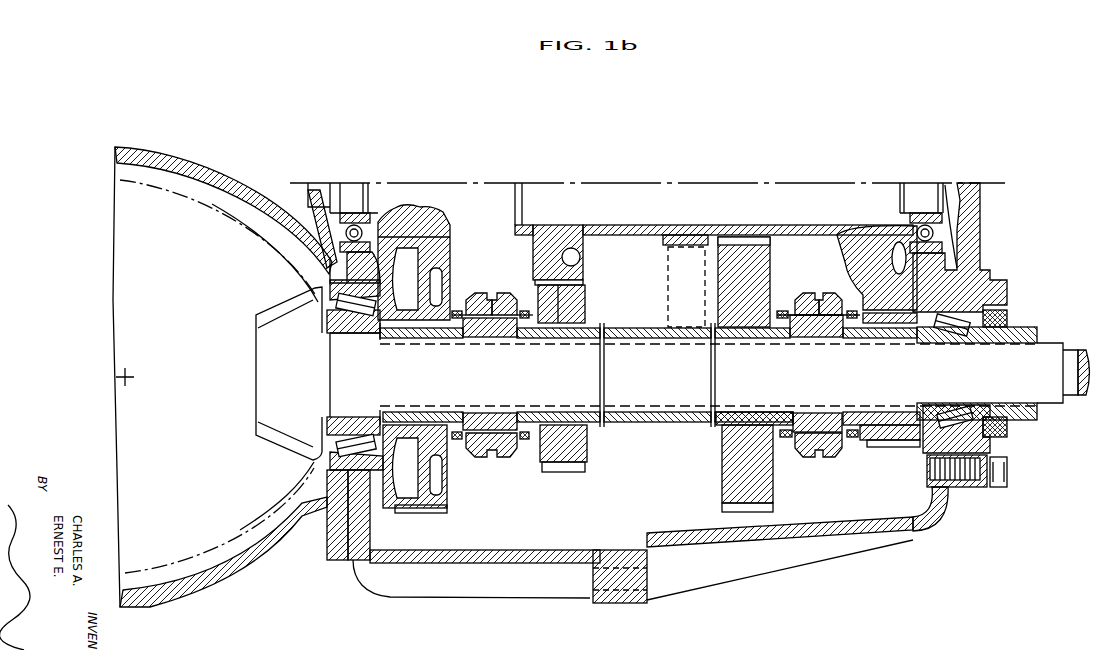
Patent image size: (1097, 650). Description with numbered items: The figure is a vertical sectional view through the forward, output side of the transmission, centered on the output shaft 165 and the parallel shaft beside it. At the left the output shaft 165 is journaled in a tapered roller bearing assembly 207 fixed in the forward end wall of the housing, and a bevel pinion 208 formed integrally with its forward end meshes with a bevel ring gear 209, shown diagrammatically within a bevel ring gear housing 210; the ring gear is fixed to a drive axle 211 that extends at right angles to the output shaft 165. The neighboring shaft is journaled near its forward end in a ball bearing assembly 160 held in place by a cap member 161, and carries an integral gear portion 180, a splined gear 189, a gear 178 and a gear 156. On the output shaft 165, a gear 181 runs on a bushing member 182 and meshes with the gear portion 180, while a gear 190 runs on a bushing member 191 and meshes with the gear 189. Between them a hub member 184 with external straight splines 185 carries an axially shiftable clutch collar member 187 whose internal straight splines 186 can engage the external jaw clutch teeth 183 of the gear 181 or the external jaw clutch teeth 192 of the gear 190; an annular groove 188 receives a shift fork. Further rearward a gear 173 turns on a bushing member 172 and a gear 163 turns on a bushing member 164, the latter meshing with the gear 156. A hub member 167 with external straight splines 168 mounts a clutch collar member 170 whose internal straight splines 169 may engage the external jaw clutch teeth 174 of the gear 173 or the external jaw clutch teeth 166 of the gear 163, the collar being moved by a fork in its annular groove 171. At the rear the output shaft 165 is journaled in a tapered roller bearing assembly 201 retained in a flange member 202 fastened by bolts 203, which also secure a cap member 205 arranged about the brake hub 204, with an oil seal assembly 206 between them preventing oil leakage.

The gear 156 is at (880, 246).
The ball bearing assembly 160 is at (355, 208).
The cap member 161 is at (310, 207).
The gear 163 is at (902, 447).
The bushing member 164 is at (888, 413).
The output shaft 165 is at (663, 390).
The external jaw clutch teeth 166 is at (850, 440).
The hub member 167 is at (820, 338).
The external straight splines 168 is at (800, 407).
The internal straight splines 169 is at (813, 433).
The clutch collar member 170 is at (807, 457).
The annular groove 171 is at (817, 297).
The bushing member 172 is at (733, 413).
The gear 173 is at (750, 237).
The external jaw clutch teeth 174 is at (783, 310).
The gear 178 is at (663, 247).
The gear portion 180 is at (447, 216).
The gear 181 is at (430, 512).
The bushing member 182 is at (413, 413).
The external jaw clutch teeth 183 is at (455, 311).
The hub member 184 is at (502, 338).
The external straight splines 185 is at (480, 410).
The internal straight splines 186 is at (500, 437).
The clutch collar member 187 is at (503, 297).
The annular groove 188 is at (493, 300).
The gear 189 is at (575, 270).
The gear 190 is at (571, 467).
The bushing member 191 is at (573, 413).
The external jaw clutch teeth 192 is at (525, 311).
The tapered roller bearing assembly 201 is at (950, 408).
The flange member 202 is at (967, 462).
The bolts 203 is at (1003, 487).
The hub 204 is at (1040, 420).
The cap member 205 is at (1007, 450).
The oil seal assembly 206 is at (1007, 313).
The tapered roller bearing assembly 207 is at (352, 336).
The bevel pinion 208 is at (272, 316).
The bevel ring gear 209 is at (212, 204).
The bevel ring gear housing 210 is at (203, 168).
The drive axle 211 is at (131, 371).